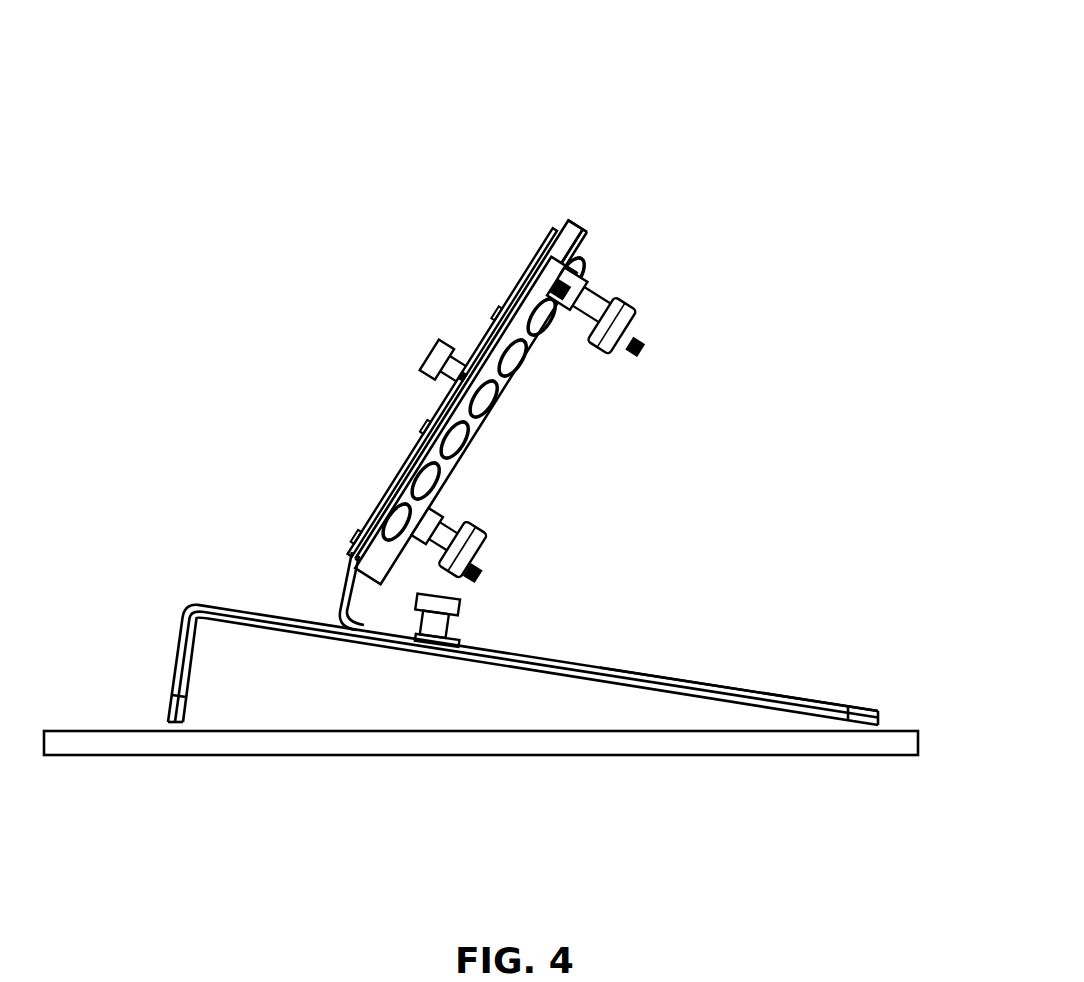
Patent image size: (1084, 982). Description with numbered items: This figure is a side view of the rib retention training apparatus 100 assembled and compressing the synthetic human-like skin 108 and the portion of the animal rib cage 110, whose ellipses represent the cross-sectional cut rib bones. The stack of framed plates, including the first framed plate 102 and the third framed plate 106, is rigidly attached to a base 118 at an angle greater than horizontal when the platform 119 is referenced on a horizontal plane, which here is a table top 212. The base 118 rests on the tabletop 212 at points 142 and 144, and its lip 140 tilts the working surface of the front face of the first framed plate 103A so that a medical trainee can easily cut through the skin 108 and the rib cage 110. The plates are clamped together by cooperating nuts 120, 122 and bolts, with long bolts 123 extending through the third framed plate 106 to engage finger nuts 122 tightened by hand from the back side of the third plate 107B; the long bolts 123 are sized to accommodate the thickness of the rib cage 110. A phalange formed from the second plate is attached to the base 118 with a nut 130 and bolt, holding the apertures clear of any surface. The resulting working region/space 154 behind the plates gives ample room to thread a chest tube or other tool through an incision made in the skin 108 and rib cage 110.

The rib retention training apparatus 100 is at (550, 46).
The first framed plate 102 is at (507, 297).
The front face of the first framed plate 103A is at (382, 485).
The third framed plate 106 is at (540, 358).
The back side of the third plate 107B is at (497, 415).
The synthetic human-like skin 108 is at (578, 226).
The portion of the animal rib cage 110 is at (532, 323).
The base 118 is at (522, 621).
The platform 119 is at (735, 688).
The nut 120 is at (417, 367).
The finger nut 122 is at (636, 326).
The long bolt 123 is at (645, 348).
The nut 130 is at (460, 637).
The lip 140 is at (170, 665).
The resting point 142 is at (195, 720).
The resting point 144 is at (888, 718).
The working region/space 154 is at (742, 520).
The table top 212 is at (390, 755).